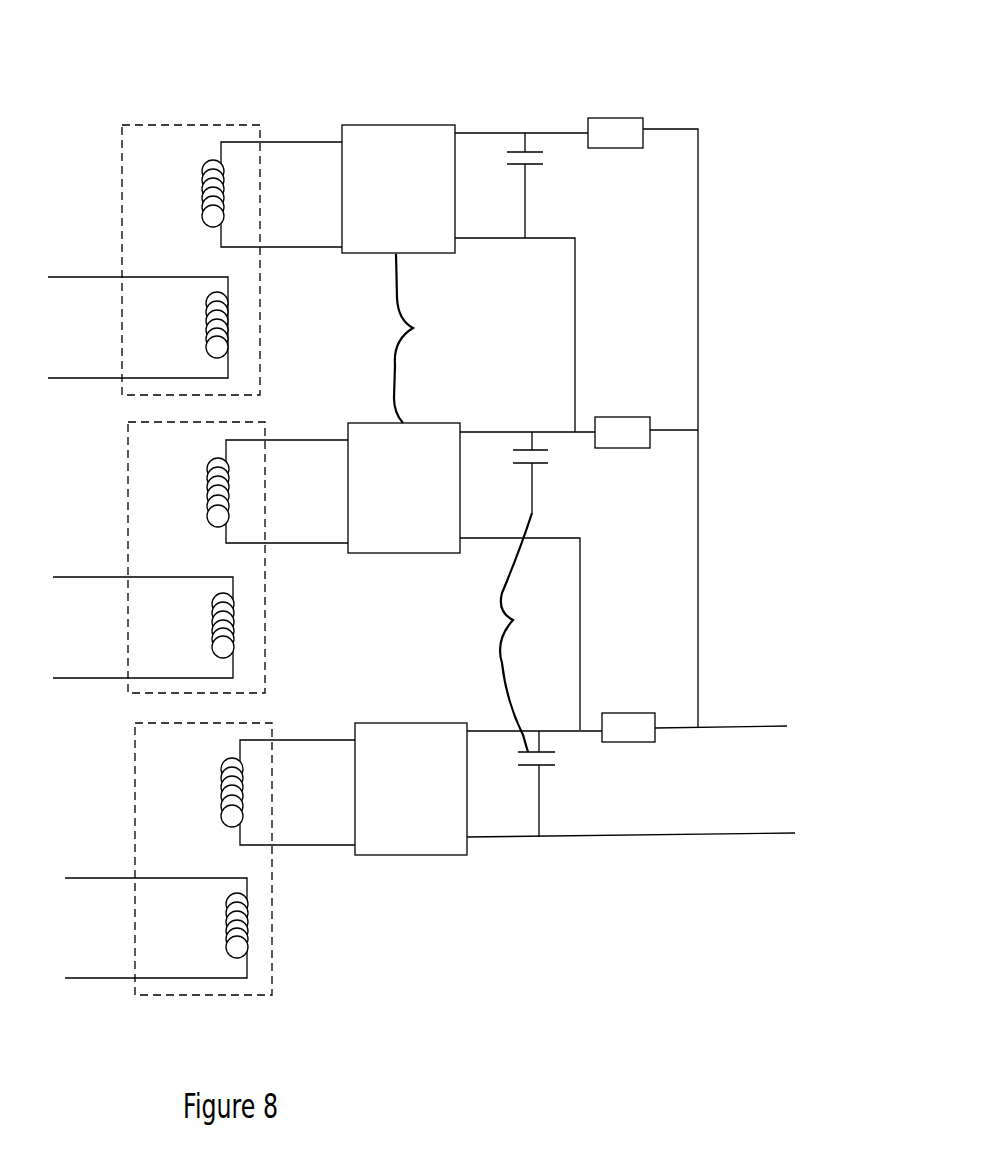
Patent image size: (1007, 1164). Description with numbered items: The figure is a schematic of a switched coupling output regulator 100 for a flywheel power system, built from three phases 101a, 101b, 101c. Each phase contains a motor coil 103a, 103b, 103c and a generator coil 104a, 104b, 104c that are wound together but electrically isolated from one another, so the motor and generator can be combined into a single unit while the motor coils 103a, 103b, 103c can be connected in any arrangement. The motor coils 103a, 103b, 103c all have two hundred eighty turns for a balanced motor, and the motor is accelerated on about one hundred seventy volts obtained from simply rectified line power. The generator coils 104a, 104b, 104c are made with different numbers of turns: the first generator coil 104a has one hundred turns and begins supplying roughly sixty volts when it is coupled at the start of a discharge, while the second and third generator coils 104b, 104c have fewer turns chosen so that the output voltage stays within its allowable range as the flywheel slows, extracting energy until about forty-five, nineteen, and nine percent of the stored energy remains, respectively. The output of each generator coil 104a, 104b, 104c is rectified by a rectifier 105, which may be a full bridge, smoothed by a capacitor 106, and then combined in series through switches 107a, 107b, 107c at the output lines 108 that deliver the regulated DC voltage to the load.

The switched coupling output regulator 100 is at (325, 36).
The phase 101a is at (202, 859).
The phase 101b is at (197, 557).
The phase 101c is at (192, 260).
The motor coil 103a is at (248, 932).
The motor coil 103b is at (234, 620).
The motor coil 103c is at (228, 325).
The generator coil 104a is at (243, 792).
The generator coil 104b is at (229, 492).
The generator coil 104c is at (224, 198).
The rectifier 105 is at (426, 338).
The capacitor 106 is at (529, 632).
The switch 107a is at (608, 742).
The switch 107b is at (610, 448).
The switch 107c is at (604, 148).
The output lines 108 is at (784, 771).